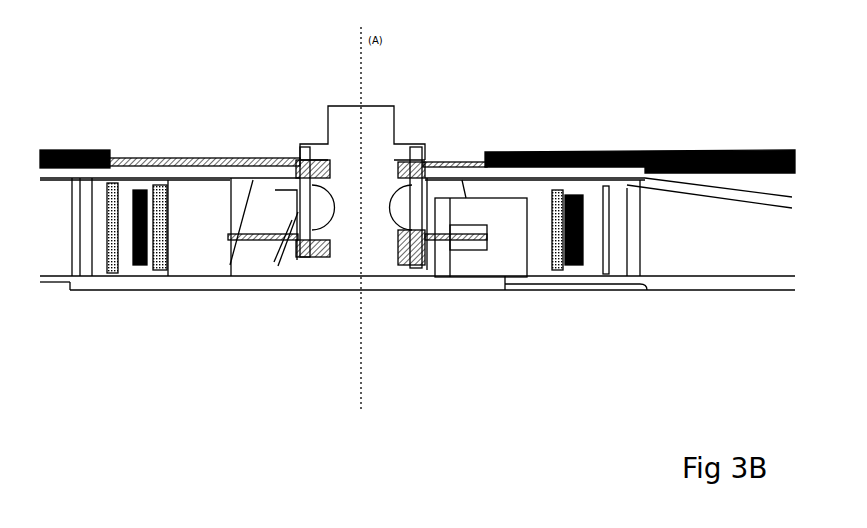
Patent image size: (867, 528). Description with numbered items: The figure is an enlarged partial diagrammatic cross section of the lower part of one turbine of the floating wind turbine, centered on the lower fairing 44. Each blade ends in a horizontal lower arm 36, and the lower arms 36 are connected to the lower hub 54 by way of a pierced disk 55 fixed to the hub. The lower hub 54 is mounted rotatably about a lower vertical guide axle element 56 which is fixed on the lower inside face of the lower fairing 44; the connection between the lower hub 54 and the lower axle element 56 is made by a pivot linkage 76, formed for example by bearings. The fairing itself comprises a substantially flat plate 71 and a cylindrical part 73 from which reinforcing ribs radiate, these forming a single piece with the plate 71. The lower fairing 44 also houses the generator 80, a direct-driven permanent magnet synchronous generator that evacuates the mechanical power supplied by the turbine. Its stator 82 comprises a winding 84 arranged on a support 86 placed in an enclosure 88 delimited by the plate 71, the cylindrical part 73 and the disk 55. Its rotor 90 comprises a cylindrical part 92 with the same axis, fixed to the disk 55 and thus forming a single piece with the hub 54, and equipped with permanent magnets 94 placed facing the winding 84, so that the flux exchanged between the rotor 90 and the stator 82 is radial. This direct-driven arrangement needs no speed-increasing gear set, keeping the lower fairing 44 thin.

The lower arm 36 is at (55, 150).
The lower fairing 44 is at (414, 298).
The lower hub 54 is at (281, 275).
The disk 55 is at (195, 170).
The lower vertical guide axle element 56 is at (383, 118).
The plate 71 is at (720, 283).
The cylindrical part 73 is at (640, 286).
The pivot linkage 76 is at (298, 168).
The generator 80 is at (245, 279).
The stator 82 is at (150, 275).
The winding 84 is at (150, 178).
The support 86 is at (127, 272).
The enclosure 88 is at (297, 268).
The rotor 90 is at (162, 265).
The cylindrical part 92 is at (530, 278).
The permanent magnets 94 is at (148, 265).